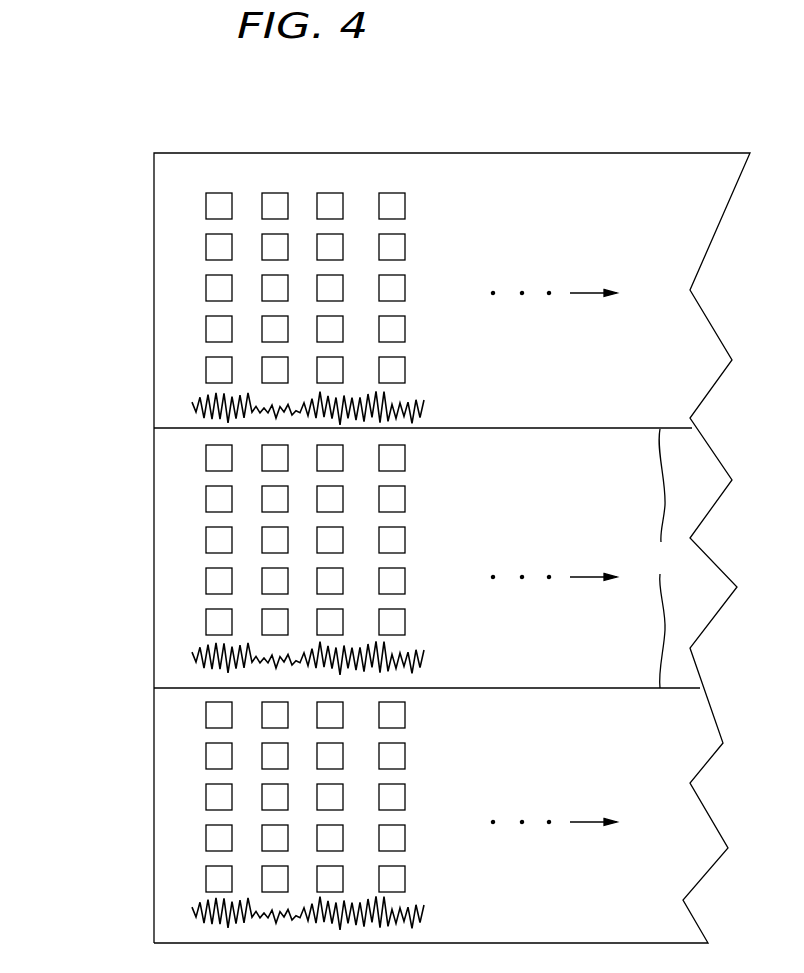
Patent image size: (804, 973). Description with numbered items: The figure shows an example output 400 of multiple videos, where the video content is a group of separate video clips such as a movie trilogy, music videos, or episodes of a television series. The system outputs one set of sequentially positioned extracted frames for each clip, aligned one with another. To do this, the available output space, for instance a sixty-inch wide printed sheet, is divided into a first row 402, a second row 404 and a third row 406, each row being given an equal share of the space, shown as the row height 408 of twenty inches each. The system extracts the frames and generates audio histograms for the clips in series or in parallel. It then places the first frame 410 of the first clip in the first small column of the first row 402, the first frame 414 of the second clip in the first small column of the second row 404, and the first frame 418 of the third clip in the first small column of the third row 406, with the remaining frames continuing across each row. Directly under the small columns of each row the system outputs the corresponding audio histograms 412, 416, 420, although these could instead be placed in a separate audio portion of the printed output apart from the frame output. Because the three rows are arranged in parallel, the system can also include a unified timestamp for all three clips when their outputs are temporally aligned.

The output 400 is at (462, 153).
The first row 402 is at (154, 282).
The second row 404 is at (154, 550).
The third row 406 is at (154, 775).
The row height 408 is at (661, 558).
The first frame 410 is at (204, 200).
The histogram 412 is at (190, 399).
The first frame 414 is at (206, 458).
The histogram 416 is at (190, 653).
The first frame 418 is at (206, 710).
The histogram 420 is at (190, 913).